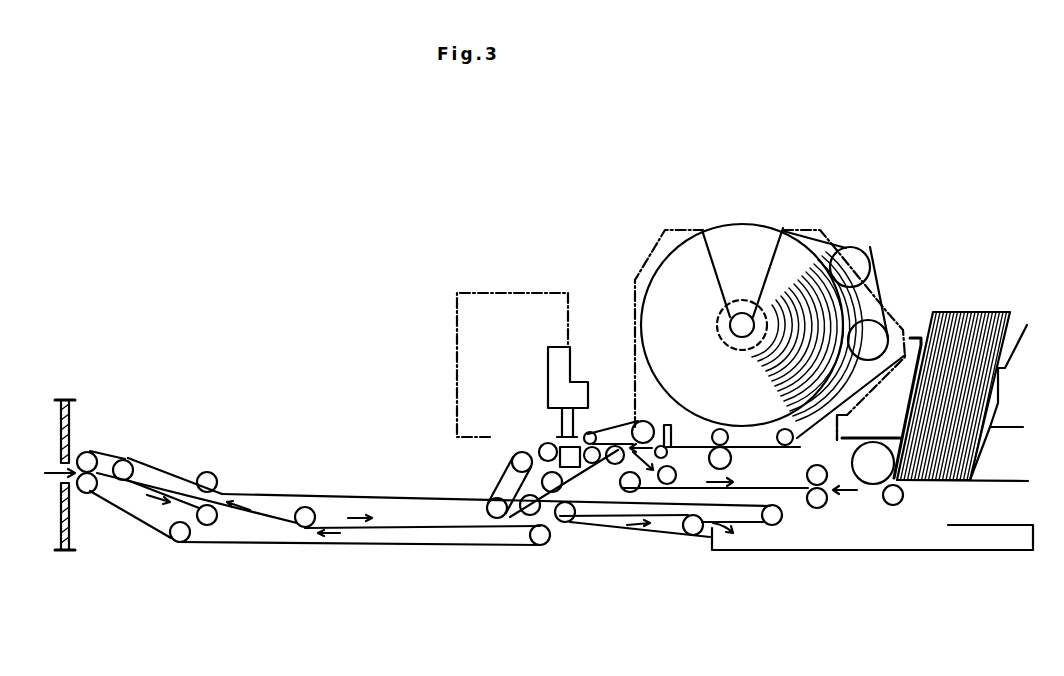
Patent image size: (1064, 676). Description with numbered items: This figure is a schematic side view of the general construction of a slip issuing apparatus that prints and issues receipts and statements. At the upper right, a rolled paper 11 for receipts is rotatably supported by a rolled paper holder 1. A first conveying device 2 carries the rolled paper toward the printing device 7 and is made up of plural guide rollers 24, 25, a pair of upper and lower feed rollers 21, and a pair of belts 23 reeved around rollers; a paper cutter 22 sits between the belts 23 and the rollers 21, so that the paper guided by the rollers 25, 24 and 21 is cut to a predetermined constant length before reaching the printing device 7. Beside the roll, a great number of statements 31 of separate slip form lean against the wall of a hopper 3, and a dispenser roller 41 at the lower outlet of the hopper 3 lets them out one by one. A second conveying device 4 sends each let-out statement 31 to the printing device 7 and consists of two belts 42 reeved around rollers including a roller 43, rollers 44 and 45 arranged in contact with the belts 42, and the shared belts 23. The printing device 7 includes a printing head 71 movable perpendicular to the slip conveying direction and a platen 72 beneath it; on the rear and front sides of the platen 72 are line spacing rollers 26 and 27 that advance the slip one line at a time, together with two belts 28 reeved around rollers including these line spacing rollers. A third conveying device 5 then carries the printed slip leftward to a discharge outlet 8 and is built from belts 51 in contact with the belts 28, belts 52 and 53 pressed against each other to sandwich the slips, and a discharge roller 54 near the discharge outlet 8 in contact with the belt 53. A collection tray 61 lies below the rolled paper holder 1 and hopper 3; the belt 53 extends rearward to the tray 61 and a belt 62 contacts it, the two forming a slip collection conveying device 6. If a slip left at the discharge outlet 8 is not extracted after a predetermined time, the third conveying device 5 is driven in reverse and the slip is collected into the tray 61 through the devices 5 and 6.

The rolled paper holder 1 is at (680, 222).
The rolled paper 11 is at (752, 227).
The guide rollers 25 is at (872, 325).
The statements 31 is at (975, 316).
The hopper 3 is at (1020, 337).
The printing device 7 is at (530, 285).
The printing head 71 is at (548, 392).
The platen 72 is at (572, 468).
The belts 23 is at (636, 425).
The line spacing roller 26 is at (597, 434).
The line spacing roller 27 is at (543, 447).
The paper cutter 22 is at (675, 423).
The feed rollers 21 is at (712, 445).
The guide roller 24 is at (782, 430).
The first conveying device 2 is at (731, 455).
The second conveying device 4 is at (777, 482).
The roller 44 is at (818, 465).
The roller 45 is at (672, 474).
The roller 43 is at (624, 478).
The dispenser roller 41 is at (866, 484).
The belts 42 is at (797, 512).
The collection tray 61 is at (1015, 525).
The slip collection conveying device 6 is at (678, 524).
The belt 62 is at (656, 505).
The belts 28 is at (552, 492).
The belts 51 is at (505, 465).
The third conveying device 5 is at (278, 490).
The belts 52 is at (345, 494).
The belt 53 is at (312, 546).
The discharge roller 54 is at (90, 458).
The discharge outlet 8 is at (56, 462).